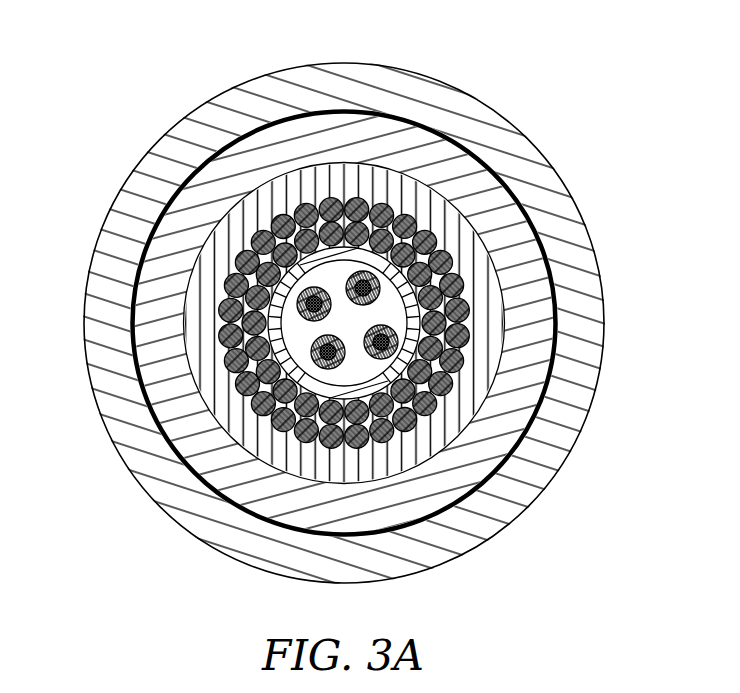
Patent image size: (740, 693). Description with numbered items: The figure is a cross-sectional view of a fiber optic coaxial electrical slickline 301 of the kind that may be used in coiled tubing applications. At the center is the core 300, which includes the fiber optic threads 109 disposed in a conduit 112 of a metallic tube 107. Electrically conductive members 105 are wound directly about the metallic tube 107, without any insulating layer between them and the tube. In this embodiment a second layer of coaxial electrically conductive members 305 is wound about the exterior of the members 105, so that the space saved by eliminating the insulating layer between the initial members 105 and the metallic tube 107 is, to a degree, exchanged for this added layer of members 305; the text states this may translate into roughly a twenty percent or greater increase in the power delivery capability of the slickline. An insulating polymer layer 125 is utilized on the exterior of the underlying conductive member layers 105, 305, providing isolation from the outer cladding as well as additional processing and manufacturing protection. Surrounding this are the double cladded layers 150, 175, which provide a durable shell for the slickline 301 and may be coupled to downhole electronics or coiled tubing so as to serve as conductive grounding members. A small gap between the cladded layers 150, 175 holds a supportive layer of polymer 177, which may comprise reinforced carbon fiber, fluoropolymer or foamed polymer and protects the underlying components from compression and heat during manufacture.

The fiber optic coaxial electrical slickline 301 is at (348, 303).
The electrically conductive members 105 is at (473, 246).
The fiber optic threads 109 is at (293, 312).
The conduit 112 is at (393, 312).
The cladded layer 150 is at (546, 327).
The cladded layer 175 is at (568, 210).
The supportive layer of polymer 177 is at (157, 193).
The insulating polymer layer 125 is at (498, 370).
The metallic tube 107 is at (412, 437).
The core 300 is at (253, 415).
The second layer of coaxial electrically conductive members 305 is at (255, 340).